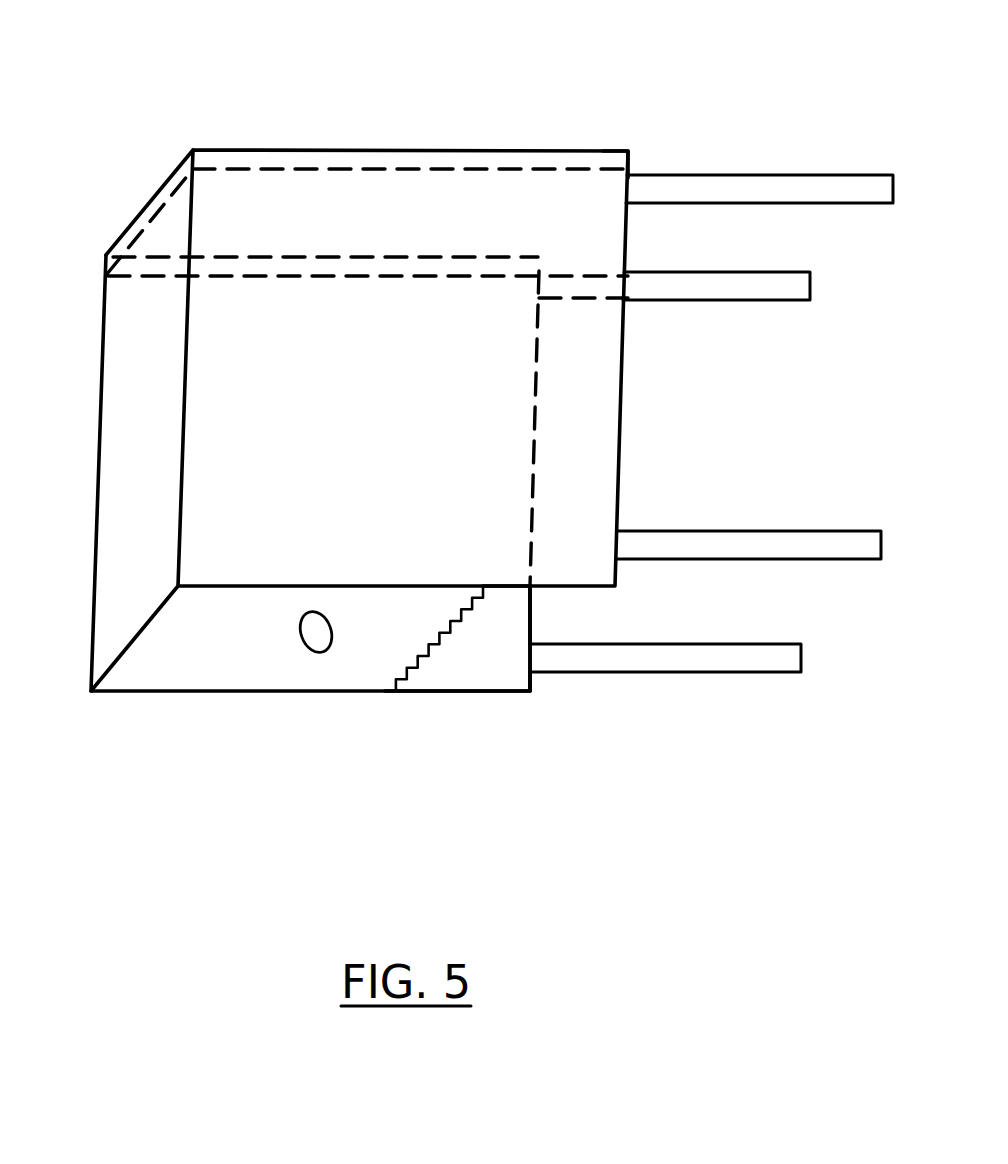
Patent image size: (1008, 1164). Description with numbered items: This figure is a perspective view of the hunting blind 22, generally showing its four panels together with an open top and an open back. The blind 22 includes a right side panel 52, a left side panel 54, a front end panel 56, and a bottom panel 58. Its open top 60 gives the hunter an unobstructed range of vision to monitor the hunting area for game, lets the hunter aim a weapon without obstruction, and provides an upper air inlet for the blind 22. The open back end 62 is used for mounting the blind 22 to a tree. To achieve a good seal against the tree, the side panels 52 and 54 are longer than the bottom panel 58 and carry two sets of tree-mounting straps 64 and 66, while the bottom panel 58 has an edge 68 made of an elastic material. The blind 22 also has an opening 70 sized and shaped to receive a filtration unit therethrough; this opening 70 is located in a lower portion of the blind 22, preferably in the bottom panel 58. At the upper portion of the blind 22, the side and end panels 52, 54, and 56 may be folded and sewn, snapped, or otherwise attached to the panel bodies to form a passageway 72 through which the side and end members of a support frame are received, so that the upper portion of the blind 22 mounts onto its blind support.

The hunting blind 22 is at (469, 118).
The right side panel 52 is at (595, 421).
The left side panel 54 is at (464, 670).
The front end panel 56 is at (110, 535).
The bottom panel 58 is at (169, 668).
The open top 60 is at (132, 169).
The open back end 62 is at (555, 617).
The tree-mounting straps 64 is at (853, 197).
The tree-mounting straps 66 is at (835, 553).
The edge 68 is at (420, 655).
The opening 70 is at (315, 653).
The passageway 72 is at (636, 146).